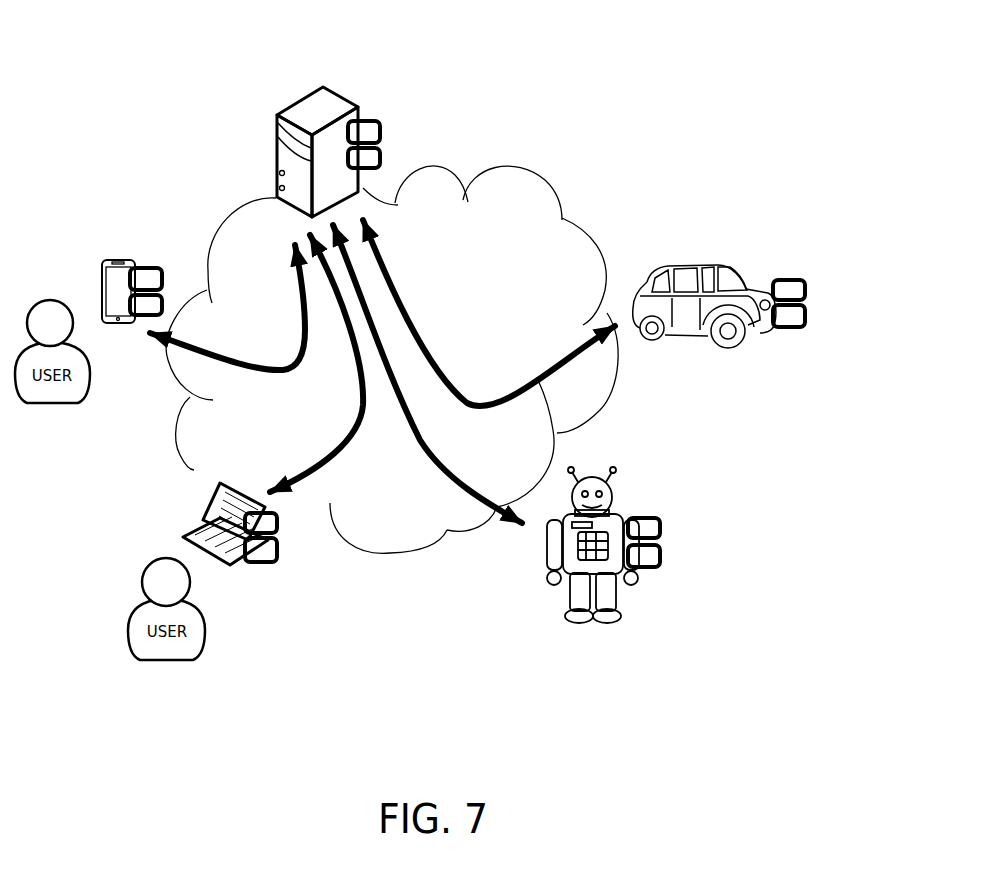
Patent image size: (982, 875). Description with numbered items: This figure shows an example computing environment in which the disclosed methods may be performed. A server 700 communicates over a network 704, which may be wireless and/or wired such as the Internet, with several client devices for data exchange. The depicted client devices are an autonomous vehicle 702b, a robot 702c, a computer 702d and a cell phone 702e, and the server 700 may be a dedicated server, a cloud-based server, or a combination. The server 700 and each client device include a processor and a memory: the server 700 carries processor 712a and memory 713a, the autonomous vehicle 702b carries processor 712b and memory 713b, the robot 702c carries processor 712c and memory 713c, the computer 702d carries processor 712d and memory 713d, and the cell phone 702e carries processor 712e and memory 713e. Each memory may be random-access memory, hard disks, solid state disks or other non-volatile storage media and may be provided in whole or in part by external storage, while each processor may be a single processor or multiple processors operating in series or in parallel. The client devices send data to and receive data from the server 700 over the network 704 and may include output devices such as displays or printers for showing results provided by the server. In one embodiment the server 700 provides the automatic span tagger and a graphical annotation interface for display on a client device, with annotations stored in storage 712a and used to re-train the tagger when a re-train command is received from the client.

The server 700 is at (325, 80).
The network 704 is at (603, 244).
The autonomous vehicle 702b is at (734, 255).
The robot 702c is at (624, 492).
The computer 702d is at (185, 529).
The cell phone 702e is at (98, 261).
The processor / storage 712a is at (384, 130).
The memory 713a is at (384, 154).
The processor 712b is at (812, 289).
The memory 713b is at (812, 314).
The processor 712c is at (667, 526).
The memory 713c is at (667, 550).
The processor 712d is at (285, 529).
The memory 713d is at (285, 553).
The processor 712e is at (167, 277).
The memory 713e is at (167, 302).